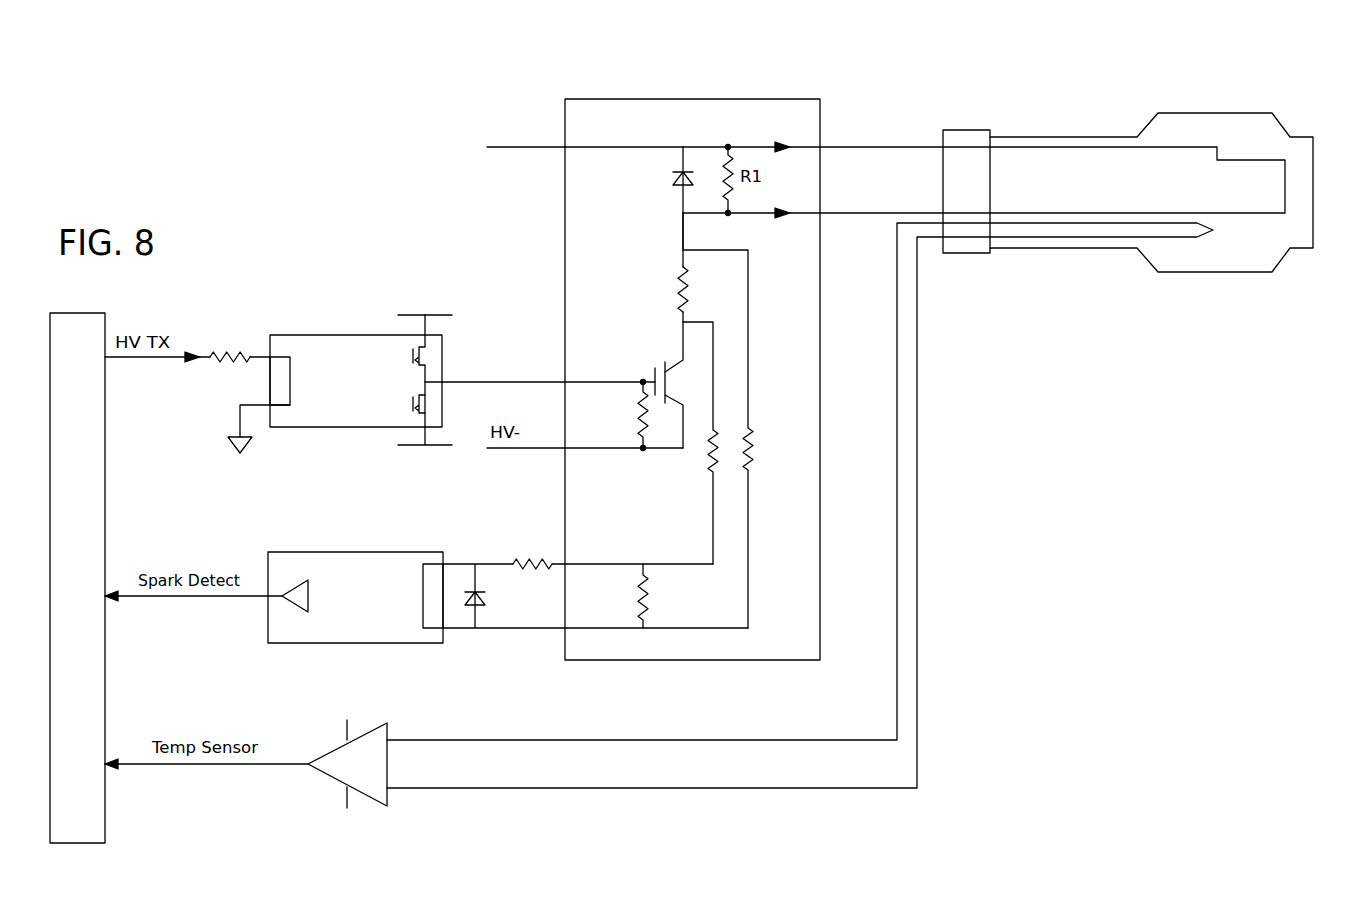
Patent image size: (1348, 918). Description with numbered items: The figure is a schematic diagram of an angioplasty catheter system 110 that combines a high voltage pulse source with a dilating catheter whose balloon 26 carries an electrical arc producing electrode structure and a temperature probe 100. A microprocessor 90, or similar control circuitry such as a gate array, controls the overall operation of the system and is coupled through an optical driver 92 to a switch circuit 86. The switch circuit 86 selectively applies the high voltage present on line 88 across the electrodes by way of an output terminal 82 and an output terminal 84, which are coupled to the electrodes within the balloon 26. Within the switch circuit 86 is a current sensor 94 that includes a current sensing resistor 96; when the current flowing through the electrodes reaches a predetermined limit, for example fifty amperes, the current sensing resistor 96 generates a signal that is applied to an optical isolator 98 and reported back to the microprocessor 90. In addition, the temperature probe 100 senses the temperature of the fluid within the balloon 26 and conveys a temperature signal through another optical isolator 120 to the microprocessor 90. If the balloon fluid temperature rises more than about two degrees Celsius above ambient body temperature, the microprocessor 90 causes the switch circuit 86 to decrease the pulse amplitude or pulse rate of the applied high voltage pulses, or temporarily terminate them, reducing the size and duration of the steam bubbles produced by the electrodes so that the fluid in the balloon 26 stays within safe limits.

The balloon 26 is at (1205, 113).
The output terminal 82 is at (761, 147).
The output terminal 84 is at (757, 214).
The switch circuit 86 is at (820, 347).
The line 88 is at (547, 147).
The microprocessor 90 is at (105, 490).
The optical driver 92 is at (312, 345).
The current sensor 94 is at (672, 268).
The current sensing resistor 96 is at (672, 298).
The optical isolator 98 is at (318, 565).
The temperature probe 100 is at (1205, 234).
The angioplasty catheter system 110 is at (888, 90).
The optical isolator 120 is at (372, 800).